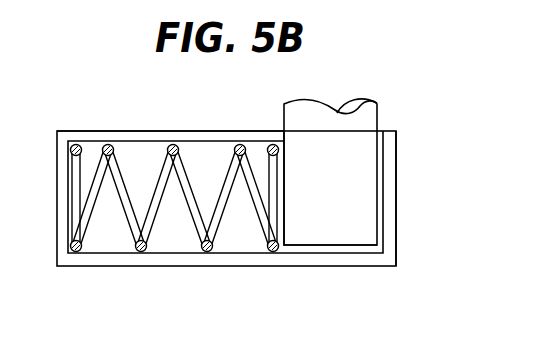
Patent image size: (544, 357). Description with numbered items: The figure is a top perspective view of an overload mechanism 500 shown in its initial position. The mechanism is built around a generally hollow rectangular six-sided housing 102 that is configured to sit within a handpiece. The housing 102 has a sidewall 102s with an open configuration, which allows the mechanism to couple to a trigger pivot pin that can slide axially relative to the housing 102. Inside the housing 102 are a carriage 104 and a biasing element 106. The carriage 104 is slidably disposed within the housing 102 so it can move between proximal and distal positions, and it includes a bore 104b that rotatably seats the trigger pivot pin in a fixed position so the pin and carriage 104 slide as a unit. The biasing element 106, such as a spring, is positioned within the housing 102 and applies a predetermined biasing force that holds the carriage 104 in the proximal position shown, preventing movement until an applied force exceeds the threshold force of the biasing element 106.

The assembly 500 is at (425, 105).
The housing 102 is at (126, 262).
The sidewall 102s is at (118, 128).
The carriage 104 is at (358, 190).
The bore 104b is at (283, 130).
The biasing element 106 is at (152, 216).